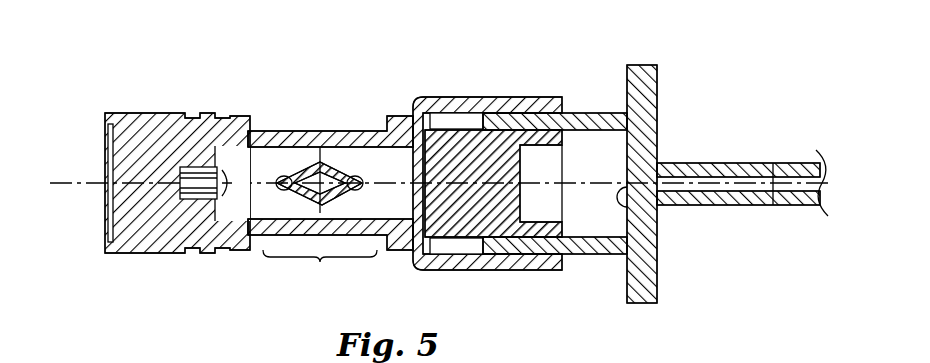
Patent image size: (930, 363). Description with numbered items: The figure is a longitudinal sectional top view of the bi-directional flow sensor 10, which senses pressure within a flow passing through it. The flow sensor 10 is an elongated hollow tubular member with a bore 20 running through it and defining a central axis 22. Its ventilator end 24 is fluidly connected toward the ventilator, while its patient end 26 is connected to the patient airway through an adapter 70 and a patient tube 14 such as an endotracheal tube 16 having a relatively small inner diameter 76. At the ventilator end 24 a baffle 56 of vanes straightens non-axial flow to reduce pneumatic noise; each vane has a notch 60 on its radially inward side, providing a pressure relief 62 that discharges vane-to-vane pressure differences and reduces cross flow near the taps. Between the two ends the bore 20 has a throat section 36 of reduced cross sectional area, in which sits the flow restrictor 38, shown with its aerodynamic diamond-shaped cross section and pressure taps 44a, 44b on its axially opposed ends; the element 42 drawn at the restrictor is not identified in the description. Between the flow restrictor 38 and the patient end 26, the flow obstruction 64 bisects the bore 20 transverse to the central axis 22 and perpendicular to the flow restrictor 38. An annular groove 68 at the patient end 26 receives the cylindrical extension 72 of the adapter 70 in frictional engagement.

The flow sensor 10 is at (175, 76).
The patient tube 14 is at (742, 162).
The endotracheal tube 16 is at (716, 163).
The bore 20 is at (393, 207).
The central axis 22 is at (65, 183).
The ventilator end 24 is at (107, 122).
The patient end 26 is at (528, 100).
The throat section 36 is at (320, 271).
The flow restrictor 38 is at (303, 168).
The valve stem 42 is at (321, 146).
The pressure tap 44a is at (278, 186).
The pressure tap 44b is at (353, 177).
The baffle 56 is at (140, 212).
The notch 60 is at (192, 200).
The pressure relief 62 is at (253, 222).
The flow obstruction 64 is at (516, 240).
The annular groove 68 is at (457, 120).
The adapter 70 is at (698, 84).
The cylindrical extension 72 is at (590, 113).
The inner diameter 76 is at (632, 220).